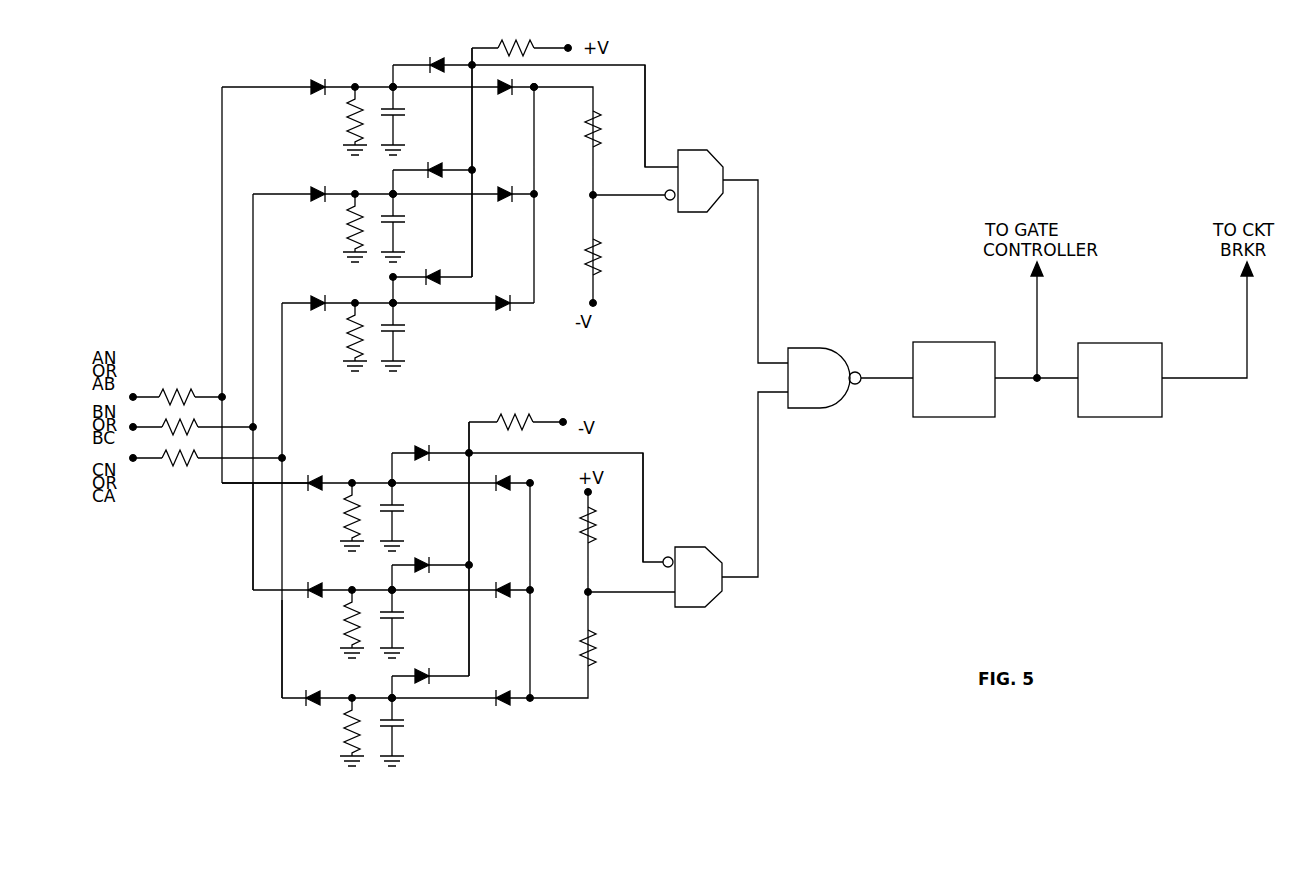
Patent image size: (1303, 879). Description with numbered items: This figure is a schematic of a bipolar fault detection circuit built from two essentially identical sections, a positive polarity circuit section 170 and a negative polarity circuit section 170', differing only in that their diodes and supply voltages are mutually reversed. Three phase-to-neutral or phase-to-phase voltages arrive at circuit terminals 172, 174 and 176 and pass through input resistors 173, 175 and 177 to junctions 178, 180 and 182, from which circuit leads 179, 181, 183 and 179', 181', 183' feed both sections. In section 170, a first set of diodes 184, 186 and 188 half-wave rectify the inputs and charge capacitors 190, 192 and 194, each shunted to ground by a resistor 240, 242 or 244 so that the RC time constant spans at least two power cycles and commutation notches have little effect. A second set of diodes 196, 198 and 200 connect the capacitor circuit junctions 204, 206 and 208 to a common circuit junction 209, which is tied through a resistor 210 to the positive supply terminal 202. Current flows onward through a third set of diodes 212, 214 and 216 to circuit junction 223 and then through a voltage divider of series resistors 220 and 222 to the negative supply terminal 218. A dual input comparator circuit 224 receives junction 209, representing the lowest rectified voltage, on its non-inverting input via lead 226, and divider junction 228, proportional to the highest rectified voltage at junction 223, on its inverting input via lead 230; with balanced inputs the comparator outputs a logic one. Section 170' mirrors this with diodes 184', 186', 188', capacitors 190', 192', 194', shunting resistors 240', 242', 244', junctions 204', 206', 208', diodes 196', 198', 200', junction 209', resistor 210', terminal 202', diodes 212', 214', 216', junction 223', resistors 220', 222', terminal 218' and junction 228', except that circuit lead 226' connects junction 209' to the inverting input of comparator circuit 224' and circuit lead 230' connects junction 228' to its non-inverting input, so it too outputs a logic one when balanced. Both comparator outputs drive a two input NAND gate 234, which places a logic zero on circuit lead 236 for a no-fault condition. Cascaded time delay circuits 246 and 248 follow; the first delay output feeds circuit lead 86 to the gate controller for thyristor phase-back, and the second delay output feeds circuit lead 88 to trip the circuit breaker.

The positive polarity circuit section 170 is at (173, 90).
The negative polarity circuit section 170' is at (215, 700).
The circuit terminal 172 is at (137, 390).
The input resistor 173 is at (179, 386).
The circuit terminal 174 is at (145, 420).
The input resistor 175 is at (179, 417).
The circuit terminal 176 is at (145, 449).
The input resistor 177 is at (189, 466).
The junction 178 is at (222, 393).
The circuit lead 179 is at (193, 285).
The circuit lead 179' is at (252, 498).
The junction 180 is at (253, 427).
The circuit lead 181 is at (258, 375).
The circuit lead 181' is at (221, 536).
The junction 182 is at (282, 458).
The circuit lead 183 is at (284, 481).
The circuit lead 183' is at (252, 649).
The diode 184 is at (321, 73).
The diode 184' is at (334, 469).
The diode 186 is at (308, 180).
The diode 186' is at (318, 576).
The diode 188 is at (321, 288).
The diode 188' is at (311, 682).
The capacitor 190 is at (418, 121).
The capacitor 190' is at (418, 517).
The capacitor 192 is at (417, 228).
The capacitor 192' is at (422, 624).
The capacitor 194 is at (416, 337).
The capacitor 194' is at (418, 732).
The diode 196 is at (416, 55).
The diode 196' is at (428, 436).
The diode 198 is at (446, 157).
The diode 198' is at (439, 551).
The diode 200 is at (443, 264).
The diode 200' is at (441, 663).
The terminal 202 is at (573, 66).
The terminal 202' is at (581, 413).
The capacitor circuit junction 204 is at (372, 77).
The capacitor circuit junction 204' is at (419, 492).
The capacitor circuit junction 206 is at (371, 182).
The capacitor circuit junction 206' is at (419, 600).
The capacitor circuit junction 208 is at (371, 293).
The capacitor circuit junction 208' is at (421, 710).
The circuit junction 209 is at (451, 162).
The circuit junction 209' is at (506, 549).
The resistor 210 is at (487, 50).
The resistor 210' is at (518, 416).
The diode 212 is at (506, 100).
The diode 212' is at (506, 502).
The diode 214 is at (506, 209).
The diode 214' is at (503, 608).
The diode 216 is at (499, 320).
The diode 216' is at (511, 718).
The terminal 218 is at (625, 303).
The terminal 218' is at (616, 495).
The resistor 220 is at (573, 133).
The resistor 220' is at (622, 655).
The resistor 222 is at (622, 257).
The resistor 222' is at (610, 536).
The circuit junction 223 is at (554, 103).
The circuit junction 223' is at (558, 721).
The dual input comparator circuit 224 is at (706, 167).
The comparator circuit 224' is at (697, 562).
The lead 226 is at (672, 116).
The circuit lead 226' is at (671, 507).
The circuit junction 228 is at (573, 186).
The circuit junction 228' is at (569, 603).
The lead 230 is at (629, 213).
The circuit lead 230' is at (631, 613).
The two input NAND gate 234 is at (832, 346).
The circuit lead 236 is at (888, 387).
The resistor 240 is at (331, 121).
The shunting resistor 240' is at (328, 517).
The resistor 242 is at (332, 228).
The shunting resistor 242' is at (328, 624).
The resistor 244 is at (334, 337).
The shunting resistor 244' is at (325, 732).
The first time delay circuit 246 is at (964, 334).
The second time delay circuit 248 is at (1144, 338).
The circuit lead 86 is at (1037, 313).
The circuit lead 88 is at (1247, 330).